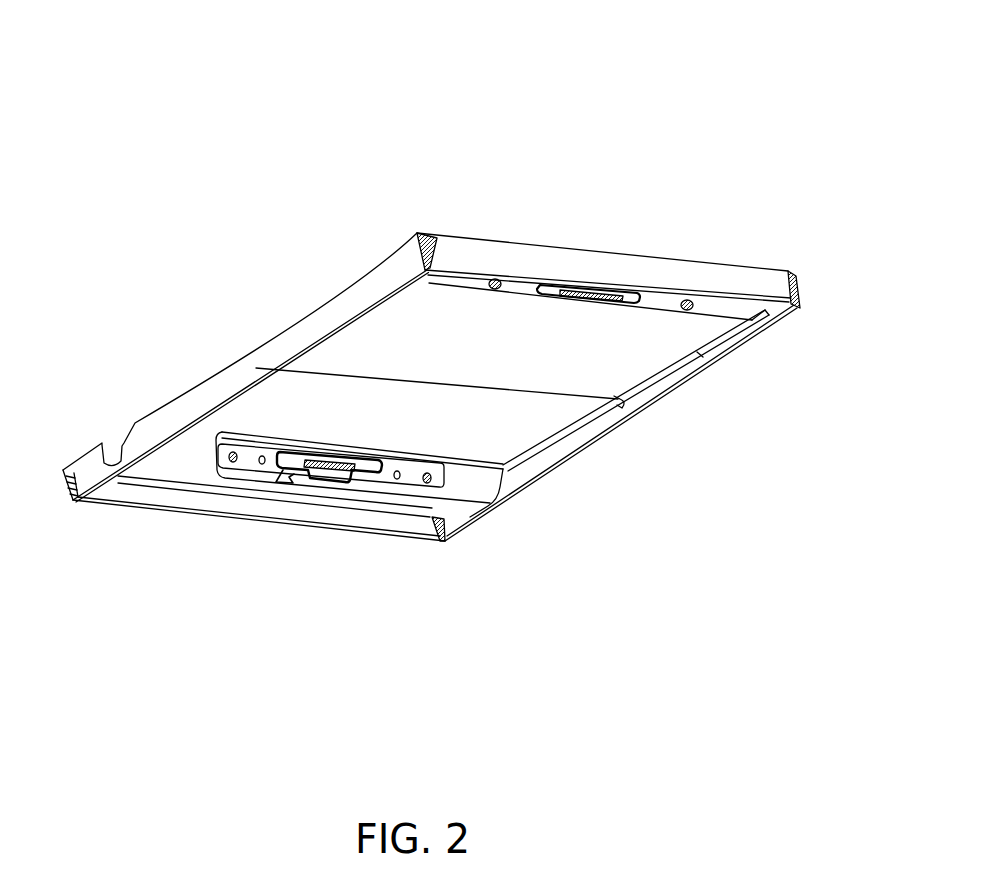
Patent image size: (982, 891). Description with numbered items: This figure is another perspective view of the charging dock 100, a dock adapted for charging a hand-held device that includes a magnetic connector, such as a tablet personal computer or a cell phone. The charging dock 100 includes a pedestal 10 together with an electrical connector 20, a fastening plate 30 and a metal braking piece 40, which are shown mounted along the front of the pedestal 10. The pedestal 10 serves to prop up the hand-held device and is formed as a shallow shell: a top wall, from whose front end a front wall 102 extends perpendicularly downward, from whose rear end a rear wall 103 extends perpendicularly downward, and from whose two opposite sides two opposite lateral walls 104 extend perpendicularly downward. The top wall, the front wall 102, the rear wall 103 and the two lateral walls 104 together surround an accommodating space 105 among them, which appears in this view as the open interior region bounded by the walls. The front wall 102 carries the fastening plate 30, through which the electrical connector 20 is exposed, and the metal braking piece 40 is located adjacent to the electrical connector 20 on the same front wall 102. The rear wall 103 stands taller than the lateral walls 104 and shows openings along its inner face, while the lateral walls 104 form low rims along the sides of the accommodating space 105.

The charging dock 100 is at (90, 48).
The pedestal 10 is at (286, 392).
The electrical connector 20 is at (340, 465).
The fastening plate 30 is at (250, 450).
The metal braking piece 40 is at (307, 478).
The front wall 102 is at (140, 492).
The rear wall 103 is at (672, 277).
The lateral walls 104 is at (677, 380).
The accommodating space 105 is at (545, 413).